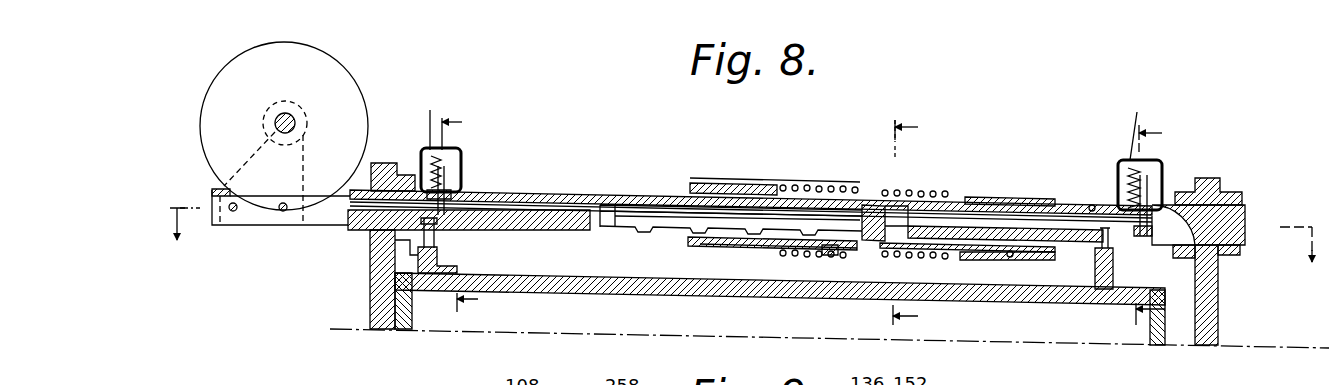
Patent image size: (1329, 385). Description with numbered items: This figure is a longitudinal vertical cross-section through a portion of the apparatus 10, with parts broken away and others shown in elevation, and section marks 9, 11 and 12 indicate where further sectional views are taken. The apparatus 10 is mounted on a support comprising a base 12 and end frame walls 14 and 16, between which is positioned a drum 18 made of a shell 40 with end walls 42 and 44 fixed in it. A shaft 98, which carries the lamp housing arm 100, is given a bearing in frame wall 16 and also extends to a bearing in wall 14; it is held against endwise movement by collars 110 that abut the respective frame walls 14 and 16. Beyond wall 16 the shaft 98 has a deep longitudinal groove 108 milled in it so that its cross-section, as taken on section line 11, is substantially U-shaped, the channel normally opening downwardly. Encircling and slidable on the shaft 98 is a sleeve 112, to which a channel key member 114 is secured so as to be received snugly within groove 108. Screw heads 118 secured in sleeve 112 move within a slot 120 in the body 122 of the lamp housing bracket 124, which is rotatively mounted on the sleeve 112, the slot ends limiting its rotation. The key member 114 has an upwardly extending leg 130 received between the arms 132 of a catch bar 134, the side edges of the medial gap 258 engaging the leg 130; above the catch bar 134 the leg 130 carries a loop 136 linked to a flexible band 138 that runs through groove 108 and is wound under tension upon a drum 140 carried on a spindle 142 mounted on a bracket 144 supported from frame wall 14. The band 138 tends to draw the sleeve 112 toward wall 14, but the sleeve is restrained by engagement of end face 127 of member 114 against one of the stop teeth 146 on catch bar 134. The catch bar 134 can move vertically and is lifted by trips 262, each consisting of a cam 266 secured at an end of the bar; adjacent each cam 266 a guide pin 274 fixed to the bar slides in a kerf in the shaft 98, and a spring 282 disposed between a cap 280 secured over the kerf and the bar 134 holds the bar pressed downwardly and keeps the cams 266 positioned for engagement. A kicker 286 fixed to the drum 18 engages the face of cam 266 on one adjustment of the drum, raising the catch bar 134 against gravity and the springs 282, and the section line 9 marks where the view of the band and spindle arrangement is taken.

The section line 9- 9 is at (743, 252).
The apparatus 10 is at (1172, 225).
The section line 11- 11 is at (932, 224).
The base 12 is at (483, 216).
The end frame wall 14 is at (378, 290).
The end frame wall 16 is at (1217, 333).
The drum 18 is at (579, 268).
The shell 40 is at (580, 291).
The end wall 42 is at (401, 330).
The end wall 44 is at (1164, 338).
The shaft 98 is at (1250, 217).
The lamp housing arm 100 is at (1243, 196).
The groove 108 is at (1091, 204).
The collar 110 is at (402, 162).
The sleeve 112 is at (930, 197).
The channel key member 114 is at (881, 199).
The screw head 118 is at (1010, 258).
The slot 120 is at (1004, 256).
The body 122 is at (778, 184).
The lamp housing bracket 124 is at (749, 175).
The end face 127 is at (850, 253).
The leg 130 is at (872, 204).
The arm 132 is at (683, 222).
The catch bar 134 is at (628, 232).
The loop 136 is at (858, 208).
The flexible band 138 is at (667, 207).
The drum 140 is at (267, 57).
The spindle 142 is at (292, 117).
The bracket 144 is at (306, 150).
The stop tooth 146 is at (810, 232).
The medial gap 258 is at (617, 220).
The trip 262 is at (474, 168).
The cam 266 is at (440, 240).
The guide pin 274 is at (450, 181).
The cap 280 is at (463, 155).
The spring 282 is at (791, 125).
The kicker 286 is at (418, 257).